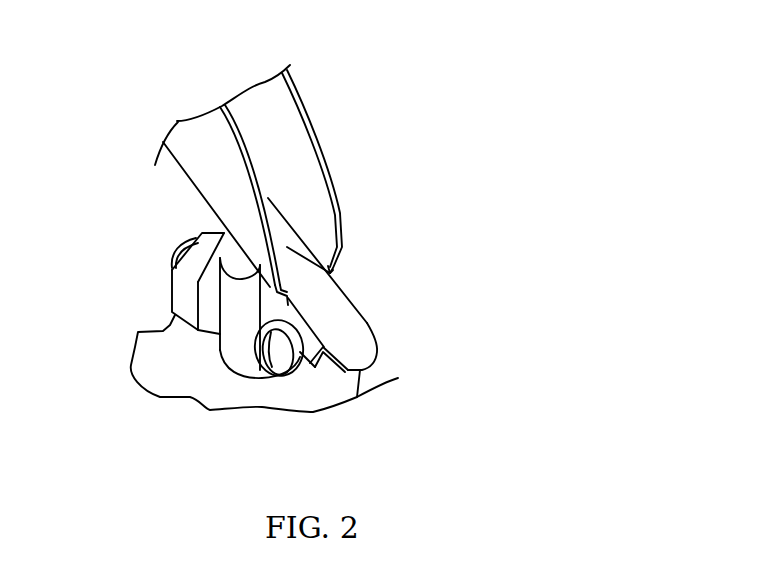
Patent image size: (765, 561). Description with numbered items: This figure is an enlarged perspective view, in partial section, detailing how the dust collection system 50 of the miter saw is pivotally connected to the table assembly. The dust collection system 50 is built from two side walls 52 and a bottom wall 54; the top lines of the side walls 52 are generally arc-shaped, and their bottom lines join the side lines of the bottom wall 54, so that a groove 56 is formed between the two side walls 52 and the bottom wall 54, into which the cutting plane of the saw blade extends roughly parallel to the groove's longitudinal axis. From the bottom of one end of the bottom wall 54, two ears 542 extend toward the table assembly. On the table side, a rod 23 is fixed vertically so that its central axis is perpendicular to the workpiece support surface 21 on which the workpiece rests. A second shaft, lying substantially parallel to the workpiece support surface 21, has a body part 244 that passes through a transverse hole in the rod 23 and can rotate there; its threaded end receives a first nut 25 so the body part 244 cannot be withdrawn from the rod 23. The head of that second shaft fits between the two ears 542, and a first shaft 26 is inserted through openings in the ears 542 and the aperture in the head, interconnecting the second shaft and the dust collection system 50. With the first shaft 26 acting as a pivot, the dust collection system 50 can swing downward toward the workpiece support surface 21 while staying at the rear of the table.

The dust collection system 50 is at (316, 111).
The side walls 52 is at (202, 133).
The groove 56 is at (332, 274).
The bottom wall 54 is at (365, 348).
The ears 542 is at (330, 372).
The first nut 25 is at (180, 299).
The body part 244 is at (170, 267).
The rod 23 is at (218, 363).
The first shaft 26 is at (268, 380).
The workpiece support surface 21 is at (150, 350).